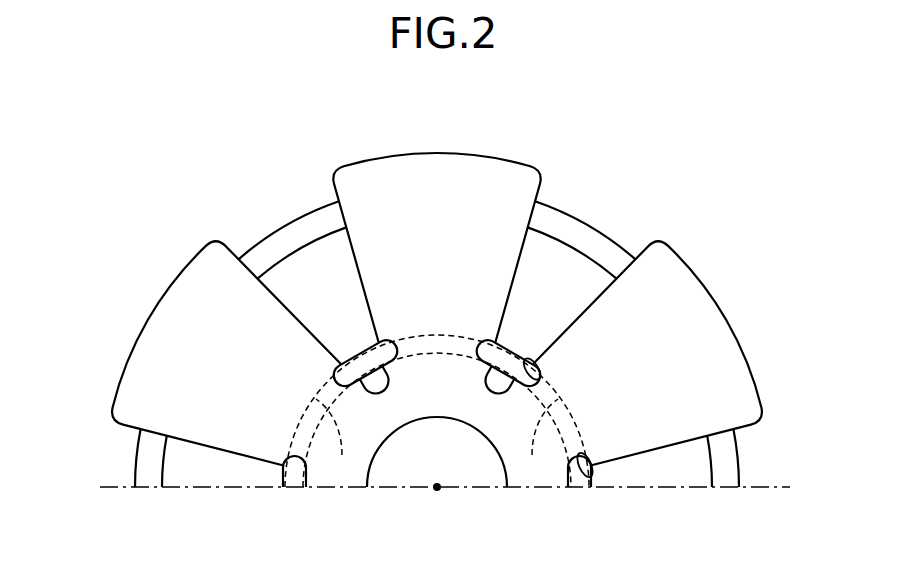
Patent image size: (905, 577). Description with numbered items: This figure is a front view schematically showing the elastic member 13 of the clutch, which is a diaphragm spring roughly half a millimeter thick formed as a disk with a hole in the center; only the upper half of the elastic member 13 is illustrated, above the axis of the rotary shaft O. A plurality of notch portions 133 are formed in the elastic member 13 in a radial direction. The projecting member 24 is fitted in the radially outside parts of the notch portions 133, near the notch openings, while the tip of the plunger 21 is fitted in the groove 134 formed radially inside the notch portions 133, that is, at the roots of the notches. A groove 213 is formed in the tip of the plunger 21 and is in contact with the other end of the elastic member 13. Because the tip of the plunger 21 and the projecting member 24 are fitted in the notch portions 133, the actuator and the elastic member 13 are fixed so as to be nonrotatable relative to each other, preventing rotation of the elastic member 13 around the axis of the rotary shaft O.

The elastic member 13 is at (477, 150).
The plunger 21 is at (356, 351).
The projecting member 24 is at (572, 210).
The notch portions 133 is at (349, 249).
The groove 134 is at (540, 362).
The groove 213 is at (342, 455).
The rotary shaft axis O is at (437, 491).